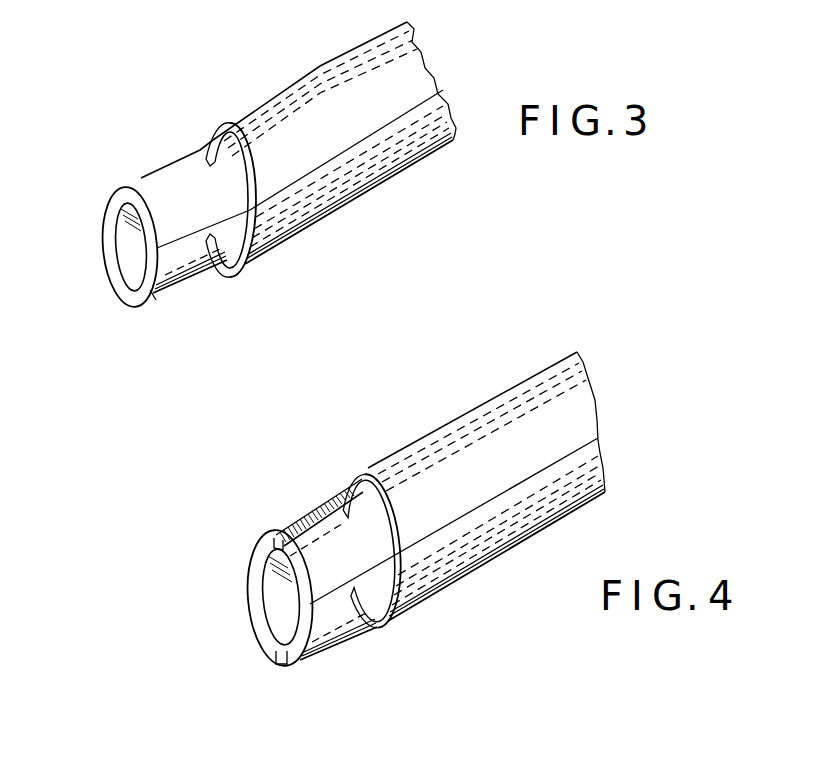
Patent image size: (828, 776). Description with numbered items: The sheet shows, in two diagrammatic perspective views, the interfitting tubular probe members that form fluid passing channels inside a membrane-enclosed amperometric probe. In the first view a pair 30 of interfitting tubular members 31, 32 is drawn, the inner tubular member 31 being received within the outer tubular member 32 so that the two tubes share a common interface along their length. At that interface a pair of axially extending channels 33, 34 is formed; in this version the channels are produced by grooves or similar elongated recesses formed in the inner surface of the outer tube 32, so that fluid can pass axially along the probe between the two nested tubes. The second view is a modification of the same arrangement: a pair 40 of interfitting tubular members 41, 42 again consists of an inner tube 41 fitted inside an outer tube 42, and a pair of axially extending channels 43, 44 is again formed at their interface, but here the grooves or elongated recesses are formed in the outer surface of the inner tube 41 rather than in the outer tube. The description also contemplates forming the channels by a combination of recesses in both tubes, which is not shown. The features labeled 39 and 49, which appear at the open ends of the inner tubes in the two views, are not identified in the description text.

In FIG. 3, the pair of interfitting tubular members 30 is at (284, 70).
In FIG. 3, the inner tubular member 31 is at (150, 292).
In FIG. 3, the outer tubular member 32 is at (197, 143).
In FIG. 3, the axially extending channel 33 is at (270, 251).
In FIG. 3, the axially extending channel 34 is at (212, 128).
In FIG. 3, the tube bore 39 is at (123, 248).
In FIG. 4, the pair of interfitting tubular members 40 is at (462, 400).
In FIG. 4, the inner tubular member 41 is at (252, 585).
In FIG. 4, the outer tubular member 42 is at (358, 482).
In FIG. 4, the axially extending channel 43 is at (312, 518).
In FIG. 4, the axially extending channel 44 is at (281, 664).
In FIG. 4, the tube bore 49 is at (275, 612).